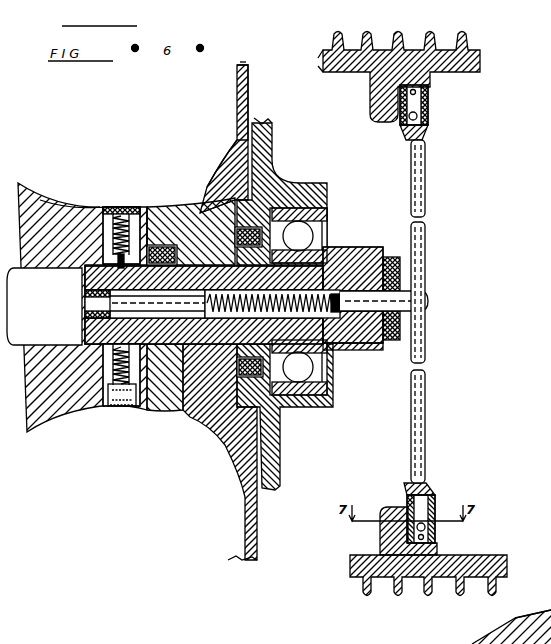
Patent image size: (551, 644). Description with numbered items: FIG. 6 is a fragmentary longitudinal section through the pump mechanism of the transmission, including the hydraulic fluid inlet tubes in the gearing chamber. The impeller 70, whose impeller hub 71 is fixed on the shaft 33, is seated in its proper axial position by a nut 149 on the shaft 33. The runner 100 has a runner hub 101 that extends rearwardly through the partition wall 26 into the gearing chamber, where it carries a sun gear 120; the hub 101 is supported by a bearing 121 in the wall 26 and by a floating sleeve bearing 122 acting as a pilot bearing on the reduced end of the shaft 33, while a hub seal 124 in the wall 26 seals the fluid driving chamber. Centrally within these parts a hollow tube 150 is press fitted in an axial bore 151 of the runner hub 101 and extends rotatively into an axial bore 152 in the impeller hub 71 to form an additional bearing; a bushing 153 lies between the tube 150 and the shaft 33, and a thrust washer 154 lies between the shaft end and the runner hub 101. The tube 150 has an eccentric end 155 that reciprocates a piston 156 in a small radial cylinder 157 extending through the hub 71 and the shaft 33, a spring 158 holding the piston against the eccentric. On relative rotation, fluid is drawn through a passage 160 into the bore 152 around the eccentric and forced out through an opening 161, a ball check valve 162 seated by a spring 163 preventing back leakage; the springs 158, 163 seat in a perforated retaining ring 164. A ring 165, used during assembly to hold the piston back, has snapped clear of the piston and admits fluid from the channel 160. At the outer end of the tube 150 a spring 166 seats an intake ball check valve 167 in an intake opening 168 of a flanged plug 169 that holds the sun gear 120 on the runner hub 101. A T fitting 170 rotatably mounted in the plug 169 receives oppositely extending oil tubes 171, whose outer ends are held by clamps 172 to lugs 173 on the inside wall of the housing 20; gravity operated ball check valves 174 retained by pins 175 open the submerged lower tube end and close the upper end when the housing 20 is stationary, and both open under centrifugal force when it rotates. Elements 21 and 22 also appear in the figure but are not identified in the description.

The impeller 70 is at (22, 198).
The impeller hub 71 is at (62, 212).
The shaft 33 is at (40, 289).
The nut 149 is at (168, 215).
The axial bore 152 is at (100, 214).
The eccentric end 155 is at (109, 214).
The opening 161 is at (275, 315).
The spring 163 is at (131, 216).
The ball check valve 162 is at (143, 207).
The runner hub 101 is at (192, 203).
The bushing 153 is at (205, 200).
The thrust washer 154 is at (218, 205).
The runner 100 is at (237, 74).
The partition wall 26 is at (262, 125).
The bearing 121 is at (275, 310).
The hub seal 124 is at (275, 310).
The floating sleeve bearing 122 is at (275, 315).
The passage 160 is at (275, 315).
The spring 166 is at (275, 310).
The intake ball check valve 167 is at (275, 310).
The intake opening 168 is at (355, 354).
The ring 165 is at (275, 315).
The hollow tube 150 is at (326, 282).
The axial bore 151 is at (340, 272).
The sun gear 120 is at (383, 250).
The flanged plug 169 is at (275, 315).
The T fitting 170 is at (412, 292).
The oil tubes 171 is at (425, 172).
The piston 156 is at (96, 395).
The radial cylinder 157 is at (106, 402).
The spring 158 is at (110, 406).
The perforated retaining ring 164 is at (130, 408).
The lugs 173 is at (371, 105).
The housing 20 is at (328, 66).
The clamps 172 is at (428, 97).
The ball check valves 174 is at (419, 115).
The pins 175 is at (416, 91).
The housing 21 is at (478, 636).
The wall 22 is at (548, 636).